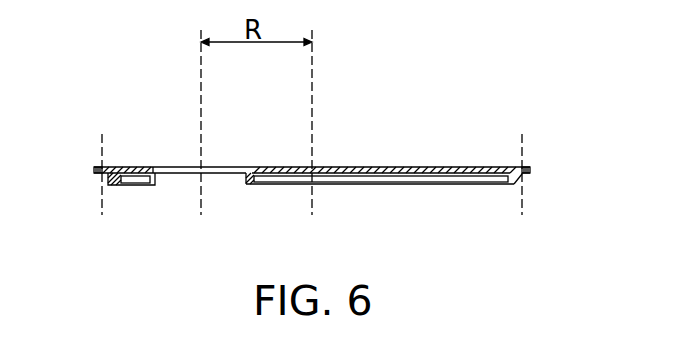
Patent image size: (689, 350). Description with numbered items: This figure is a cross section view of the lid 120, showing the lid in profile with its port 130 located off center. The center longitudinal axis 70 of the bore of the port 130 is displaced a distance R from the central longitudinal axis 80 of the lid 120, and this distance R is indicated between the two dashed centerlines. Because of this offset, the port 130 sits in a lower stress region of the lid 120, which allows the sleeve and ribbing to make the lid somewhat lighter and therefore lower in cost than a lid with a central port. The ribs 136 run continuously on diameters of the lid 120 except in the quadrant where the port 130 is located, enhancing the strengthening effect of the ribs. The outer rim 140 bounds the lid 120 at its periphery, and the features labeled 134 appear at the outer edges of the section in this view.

The lid 120 is at (398, 108).
The port 130 is at (247, 178).
The end tabs 134 is at (101, 157).
The ribs 136 is at (382, 185).
The outer rim 140 is at (117, 188).
The center longitudinal axis 70 is at (200, 97).
The central longitudinal axis 80 is at (312, 97).